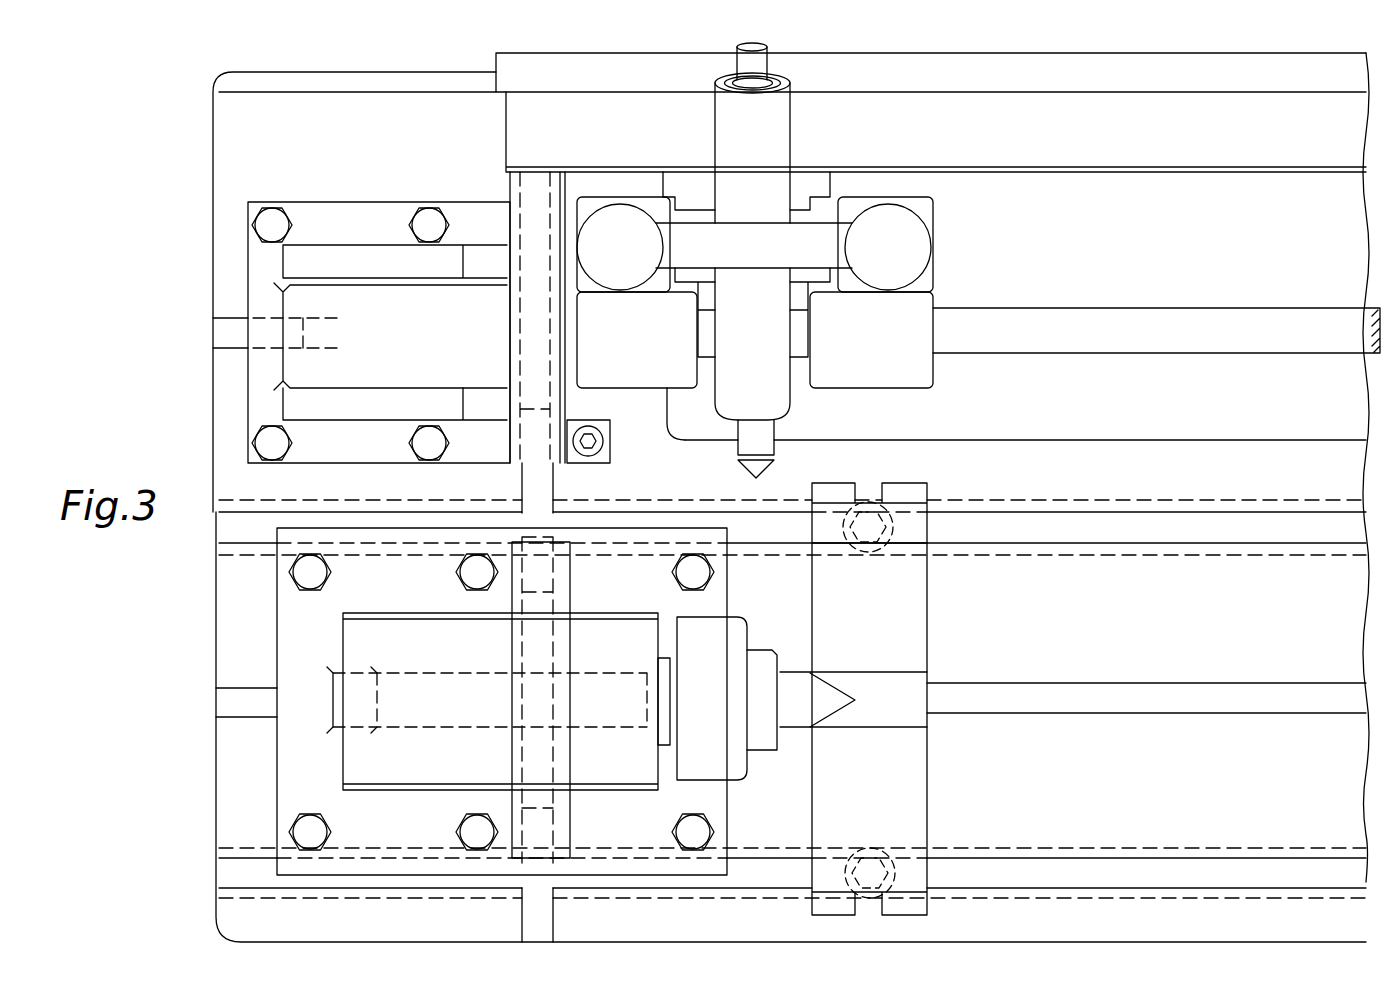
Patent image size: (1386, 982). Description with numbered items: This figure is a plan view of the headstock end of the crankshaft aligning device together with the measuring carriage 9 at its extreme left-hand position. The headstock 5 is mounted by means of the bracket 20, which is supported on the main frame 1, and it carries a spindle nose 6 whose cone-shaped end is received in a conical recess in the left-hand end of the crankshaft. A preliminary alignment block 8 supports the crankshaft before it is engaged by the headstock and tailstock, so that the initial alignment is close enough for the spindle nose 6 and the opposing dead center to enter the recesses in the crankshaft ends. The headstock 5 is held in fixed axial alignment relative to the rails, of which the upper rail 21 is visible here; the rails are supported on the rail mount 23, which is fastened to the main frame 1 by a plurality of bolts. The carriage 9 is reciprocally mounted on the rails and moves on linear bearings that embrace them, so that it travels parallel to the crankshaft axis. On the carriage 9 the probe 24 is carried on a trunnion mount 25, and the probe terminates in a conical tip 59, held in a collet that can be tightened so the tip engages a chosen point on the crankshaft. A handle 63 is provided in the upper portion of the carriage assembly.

The main frame 1 is at (225, 760).
The headstock 5 is at (352, 765).
The spindle nose 6 is at (826, 675).
The preliminary alignment block 8 is at (917, 605).
The carriage 9 is at (933, 206).
The bracket 20 is at (280, 632).
The upper rail 21 is at (1128, 311).
The rail mount 23 is at (348, 204).
The probe 24 is at (715, 143).
The trunnion mount 25 is at (808, 211).
The conical tip 59 is at (748, 470).
The handle 63 is at (931, 247).